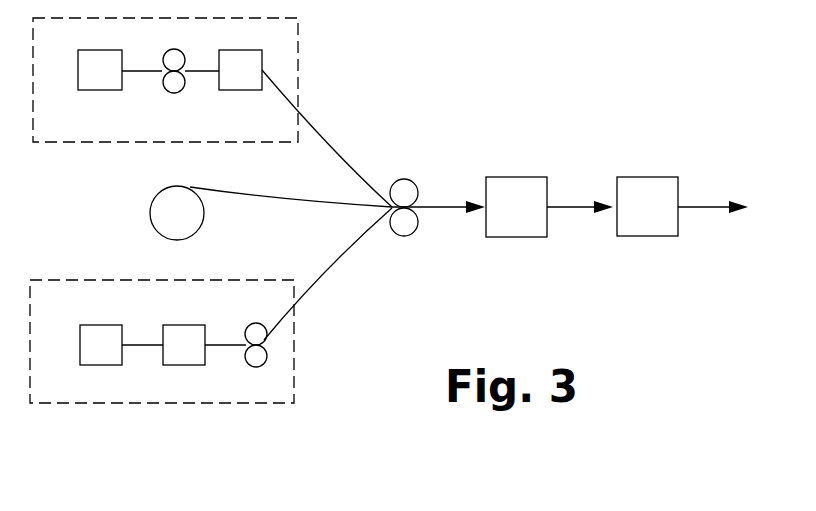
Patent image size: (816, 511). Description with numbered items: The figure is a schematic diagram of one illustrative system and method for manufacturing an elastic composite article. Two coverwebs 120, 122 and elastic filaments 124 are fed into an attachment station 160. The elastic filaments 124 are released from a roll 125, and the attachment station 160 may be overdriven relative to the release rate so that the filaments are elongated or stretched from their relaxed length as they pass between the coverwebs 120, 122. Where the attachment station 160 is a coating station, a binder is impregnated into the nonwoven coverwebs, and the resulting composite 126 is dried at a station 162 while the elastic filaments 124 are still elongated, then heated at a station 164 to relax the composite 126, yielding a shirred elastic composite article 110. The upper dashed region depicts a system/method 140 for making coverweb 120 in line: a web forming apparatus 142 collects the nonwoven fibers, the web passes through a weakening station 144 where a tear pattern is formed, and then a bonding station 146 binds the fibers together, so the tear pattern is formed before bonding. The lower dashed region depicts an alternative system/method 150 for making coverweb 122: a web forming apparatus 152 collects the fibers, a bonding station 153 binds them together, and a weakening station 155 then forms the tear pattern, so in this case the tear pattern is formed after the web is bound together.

The shirred elastic composite article 110 is at (702, 208).
The coverweb 120 is at (313, 128).
The coverweb 122 is at (330, 260).
The elastic filaments 124 is at (240, 193).
The roll 125 is at (150, 207).
The composite 126 is at (568, 208).
The system/method 140 is at (298, 50).
The web forming apparatus 142 is at (100, 90).
The weakening station 144 is at (175, 93).
The bonding station 146 is at (240, 90).
The system/method 150 is at (294, 357).
The web forming apparatus 152 is at (100, 365).
The bonding station 153 is at (187, 365).
The weakening station 155 is at (258, 367).
The attachment station 160 is at (403, 179).
The drying station 162 is at (517, 177).
The heating station 164 is at (645, 177).